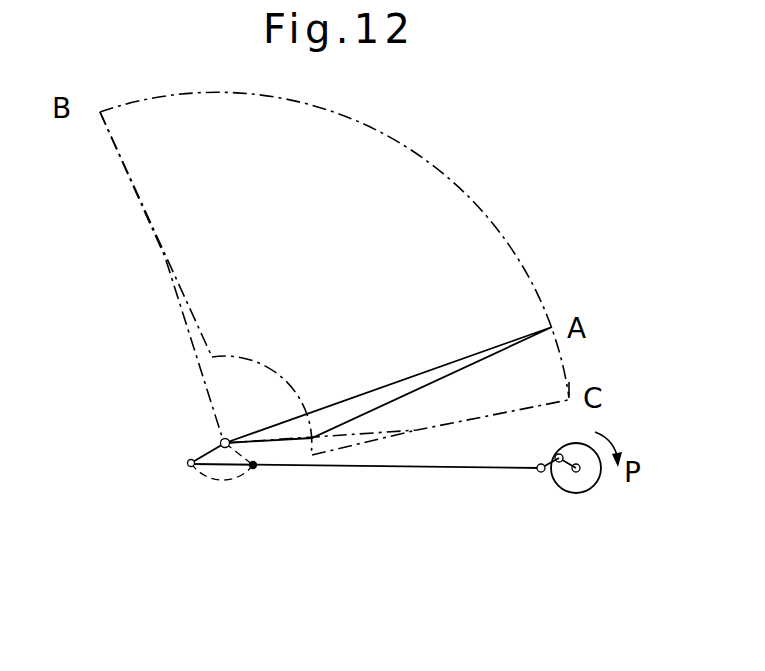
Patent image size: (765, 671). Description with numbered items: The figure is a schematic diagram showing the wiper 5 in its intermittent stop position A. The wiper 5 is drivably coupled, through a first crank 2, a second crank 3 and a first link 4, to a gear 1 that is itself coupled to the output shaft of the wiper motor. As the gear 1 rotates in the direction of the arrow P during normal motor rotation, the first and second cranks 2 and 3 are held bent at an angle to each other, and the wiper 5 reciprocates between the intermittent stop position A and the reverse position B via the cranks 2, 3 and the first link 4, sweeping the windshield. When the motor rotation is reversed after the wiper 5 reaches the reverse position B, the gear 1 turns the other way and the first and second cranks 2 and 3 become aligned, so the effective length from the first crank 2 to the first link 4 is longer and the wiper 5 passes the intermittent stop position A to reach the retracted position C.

The gear 1 is at (597, 478).
The first crank 2 is at (558, 454).
The second crank 3 is at (551, 459).
The first link 4 is at (355, 469).
The wiper 5 is at (455, 370).